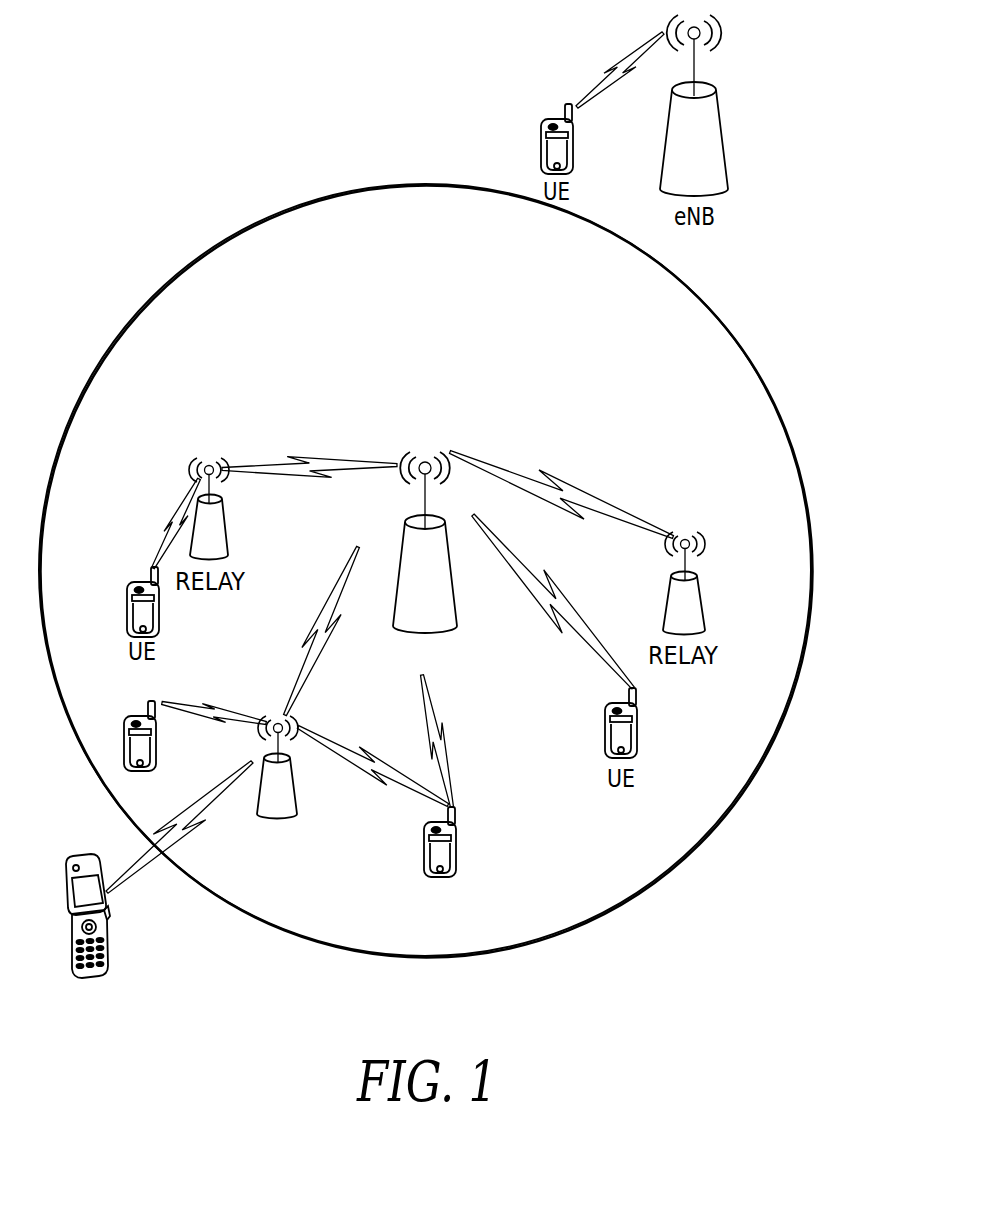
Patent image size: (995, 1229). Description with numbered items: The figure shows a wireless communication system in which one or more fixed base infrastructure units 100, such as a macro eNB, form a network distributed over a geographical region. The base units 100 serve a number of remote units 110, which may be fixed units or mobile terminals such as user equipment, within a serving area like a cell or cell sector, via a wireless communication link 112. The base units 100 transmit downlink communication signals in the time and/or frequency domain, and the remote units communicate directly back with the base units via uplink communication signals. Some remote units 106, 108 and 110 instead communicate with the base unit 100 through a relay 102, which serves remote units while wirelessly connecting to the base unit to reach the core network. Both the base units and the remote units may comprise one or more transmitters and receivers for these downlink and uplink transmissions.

The base unit 100 is at (456, 605).
The relay 102 is at (297, 794).
The remote unit 106 is at (108, 941).
The remote unit 108 is at (150, 710).
The remote unit 110 is at (457, 853).
The wireless communication link 112 is at (447, 742).